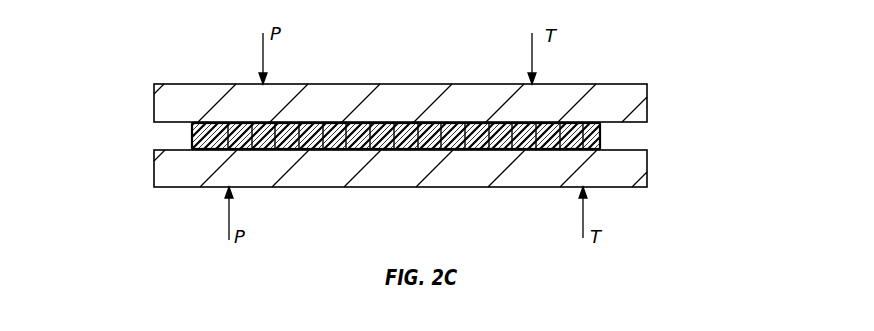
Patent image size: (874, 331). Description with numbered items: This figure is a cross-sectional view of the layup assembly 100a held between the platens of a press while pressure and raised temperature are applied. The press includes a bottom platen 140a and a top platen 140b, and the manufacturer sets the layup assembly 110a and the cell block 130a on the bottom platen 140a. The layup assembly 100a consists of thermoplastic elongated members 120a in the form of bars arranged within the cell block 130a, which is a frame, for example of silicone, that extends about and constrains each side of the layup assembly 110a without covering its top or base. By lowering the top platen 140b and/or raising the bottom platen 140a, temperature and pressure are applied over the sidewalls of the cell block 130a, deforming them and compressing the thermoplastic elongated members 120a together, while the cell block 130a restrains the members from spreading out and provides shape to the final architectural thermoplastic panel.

The layup assembly 100a is at (413, 118).
The layup assembly 110a is at (553, 135).
The thermoplastic elongated members 120a is at (230, 150).
The cell block 130a is at (190, 138).
The bottom platen 140a is at (608, 173).
The top platen 140b is at (385, 103).